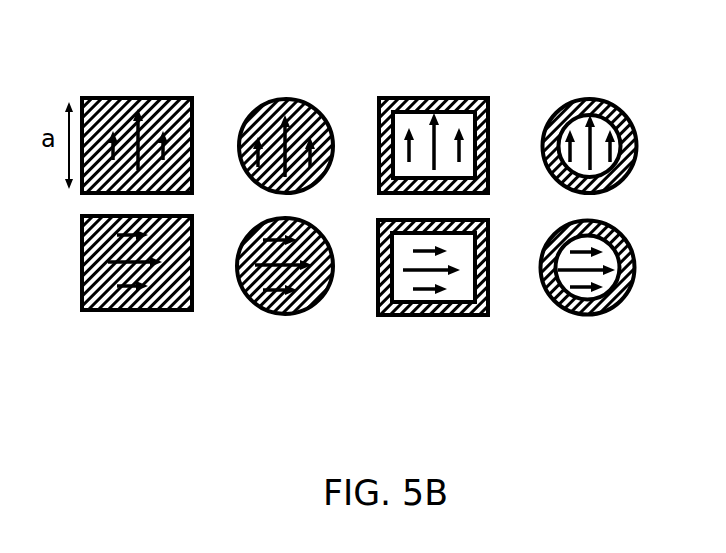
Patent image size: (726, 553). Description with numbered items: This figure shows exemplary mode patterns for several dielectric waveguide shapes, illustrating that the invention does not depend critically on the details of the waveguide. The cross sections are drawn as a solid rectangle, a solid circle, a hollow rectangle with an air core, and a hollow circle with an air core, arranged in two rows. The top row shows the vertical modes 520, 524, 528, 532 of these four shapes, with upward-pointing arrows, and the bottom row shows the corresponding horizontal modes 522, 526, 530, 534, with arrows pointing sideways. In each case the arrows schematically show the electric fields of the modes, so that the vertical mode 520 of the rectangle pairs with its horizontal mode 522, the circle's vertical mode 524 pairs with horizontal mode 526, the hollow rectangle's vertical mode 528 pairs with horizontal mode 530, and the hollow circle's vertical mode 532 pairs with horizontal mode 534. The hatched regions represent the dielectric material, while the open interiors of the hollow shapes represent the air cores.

The vertical mode 520 is at (147, 101).
The horizontal mode 522 is at (130, 312).
The vertical mode 524 is at (292, 98).
The horizontal mode 526 is at (283, 315).
The vertical mode 528 is at (437, 98).
The horizontal mode 530 is at (420, 317).
The vertical mode 532 is at (590, 100).
The horizontal mode 534 is at (572, 315).